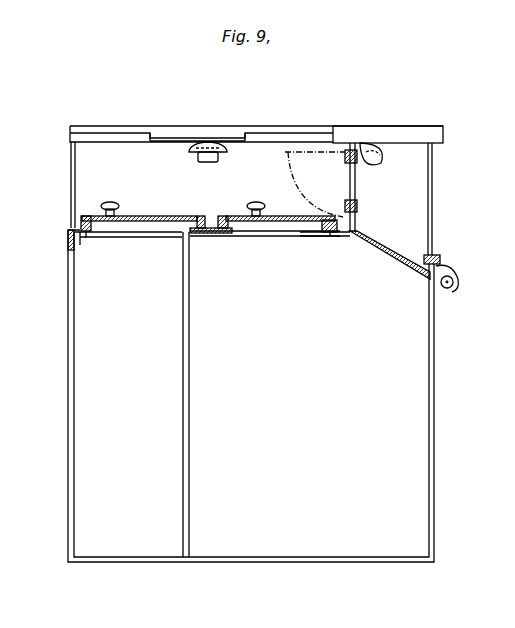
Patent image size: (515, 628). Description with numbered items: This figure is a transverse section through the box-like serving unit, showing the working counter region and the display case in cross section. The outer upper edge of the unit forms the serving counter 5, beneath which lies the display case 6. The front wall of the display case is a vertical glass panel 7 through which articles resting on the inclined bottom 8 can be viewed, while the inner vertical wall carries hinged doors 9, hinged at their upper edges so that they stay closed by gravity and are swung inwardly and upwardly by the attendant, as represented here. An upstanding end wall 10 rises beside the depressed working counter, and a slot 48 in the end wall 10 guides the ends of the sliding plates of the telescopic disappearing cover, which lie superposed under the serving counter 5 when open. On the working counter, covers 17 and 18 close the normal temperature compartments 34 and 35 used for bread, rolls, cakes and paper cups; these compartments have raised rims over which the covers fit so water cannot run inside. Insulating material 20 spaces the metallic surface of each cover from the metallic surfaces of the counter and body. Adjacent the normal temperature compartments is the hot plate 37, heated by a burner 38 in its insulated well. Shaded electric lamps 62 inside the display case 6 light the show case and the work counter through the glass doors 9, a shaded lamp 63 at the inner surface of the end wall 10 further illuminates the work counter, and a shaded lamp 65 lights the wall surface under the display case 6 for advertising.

The serving counter 5 is at (397, 127).
The display case 6 is at (415, 216).
The vertical glass panel 7 is at (433, 191).
The inclined bottom 8 is at (377, 253).
The hinged doors 9 is at (350, 184).
The end wall 10 is at (160, 127).
The cover 17 is at (283, 217).
The cover 18 is at (146, 214).
The insulating material 20 is at (80, 223).
The normal temperature compartment 34 is at (265, 308).
The normal temperature compartment 35 is at (131, 309).
The hot plate 37 is at (262, 141).
The burner 38 is at (163, 142).
The slot 48 is at (292, 138).
The shaded electric lamp 62 is at (380, 158).
The shaded lamp 63 is at (216, 142).
The shaded lamp 65 is at (456, 281).